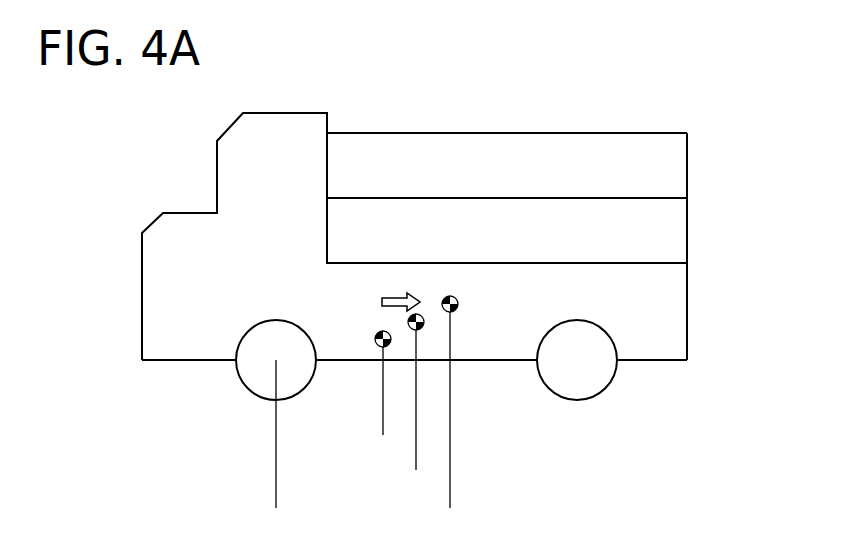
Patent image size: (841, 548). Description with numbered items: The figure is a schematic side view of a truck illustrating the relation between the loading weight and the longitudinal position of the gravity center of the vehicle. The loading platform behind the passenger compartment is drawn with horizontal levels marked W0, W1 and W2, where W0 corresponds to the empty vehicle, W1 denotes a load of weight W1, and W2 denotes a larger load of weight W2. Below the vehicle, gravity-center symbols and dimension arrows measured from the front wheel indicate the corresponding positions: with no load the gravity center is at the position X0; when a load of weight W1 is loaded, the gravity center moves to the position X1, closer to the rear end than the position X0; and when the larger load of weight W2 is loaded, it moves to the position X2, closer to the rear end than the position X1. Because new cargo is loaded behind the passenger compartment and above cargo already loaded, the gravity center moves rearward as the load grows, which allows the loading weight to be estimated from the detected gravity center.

The vehicle load weight level W0 (reference / unloaded) W0 is at (692, 263).
The weight W1 is at (692, 198).
The weight W2 is at (692, 133).
The position X0 is at (383, 425).
The position X1 is at (417, 460).
The position X2 is at (451, 495).